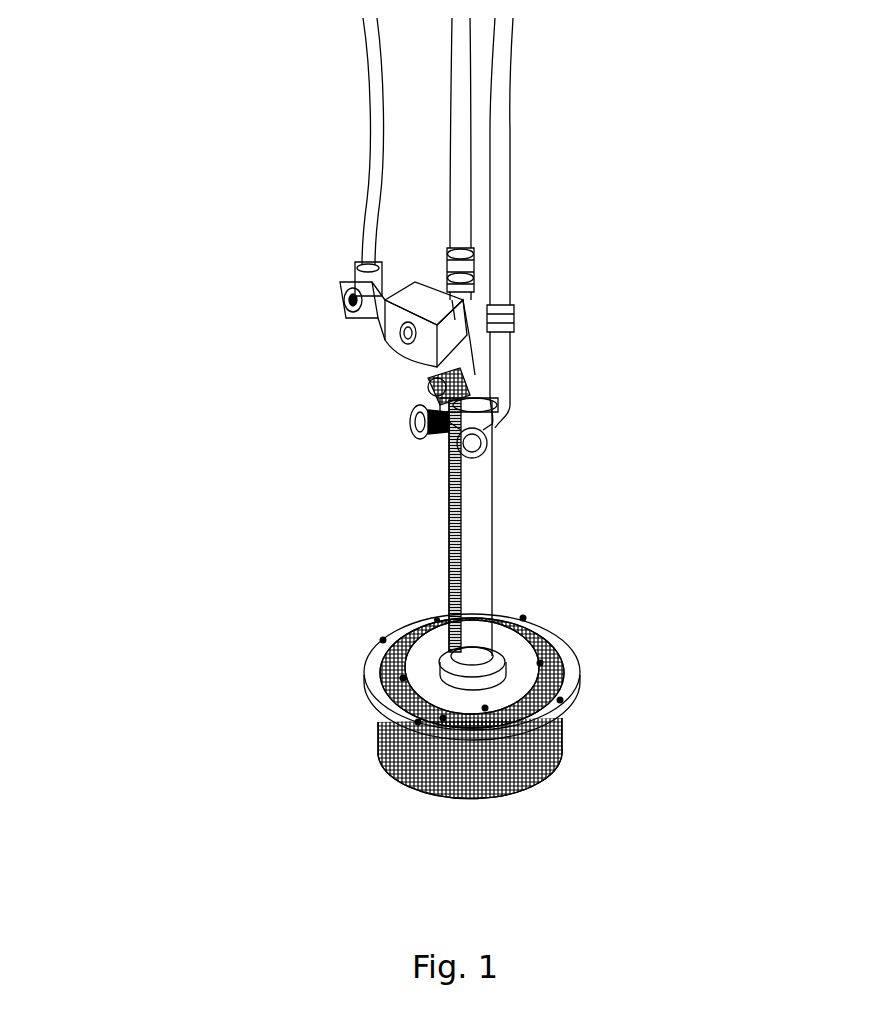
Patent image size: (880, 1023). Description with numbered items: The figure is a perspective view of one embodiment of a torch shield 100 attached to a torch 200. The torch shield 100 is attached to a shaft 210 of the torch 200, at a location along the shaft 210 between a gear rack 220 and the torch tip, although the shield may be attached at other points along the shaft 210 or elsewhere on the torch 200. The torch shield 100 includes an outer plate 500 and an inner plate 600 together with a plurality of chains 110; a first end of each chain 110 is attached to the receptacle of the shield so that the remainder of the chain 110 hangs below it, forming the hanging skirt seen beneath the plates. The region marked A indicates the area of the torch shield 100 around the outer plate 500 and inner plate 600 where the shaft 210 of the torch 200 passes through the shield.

The torch shield 100 is at (411, 710).
The chains 110 is at (420, 785).
The torch 200 is at (524, 354).
The shaft 210 is at (483, 523).
The gear rack 220 is at (449, 521).
The outer plate 500 is at (572, 673).
The inner plate 600 is at (520, 650).
The section A is at (378, 655).